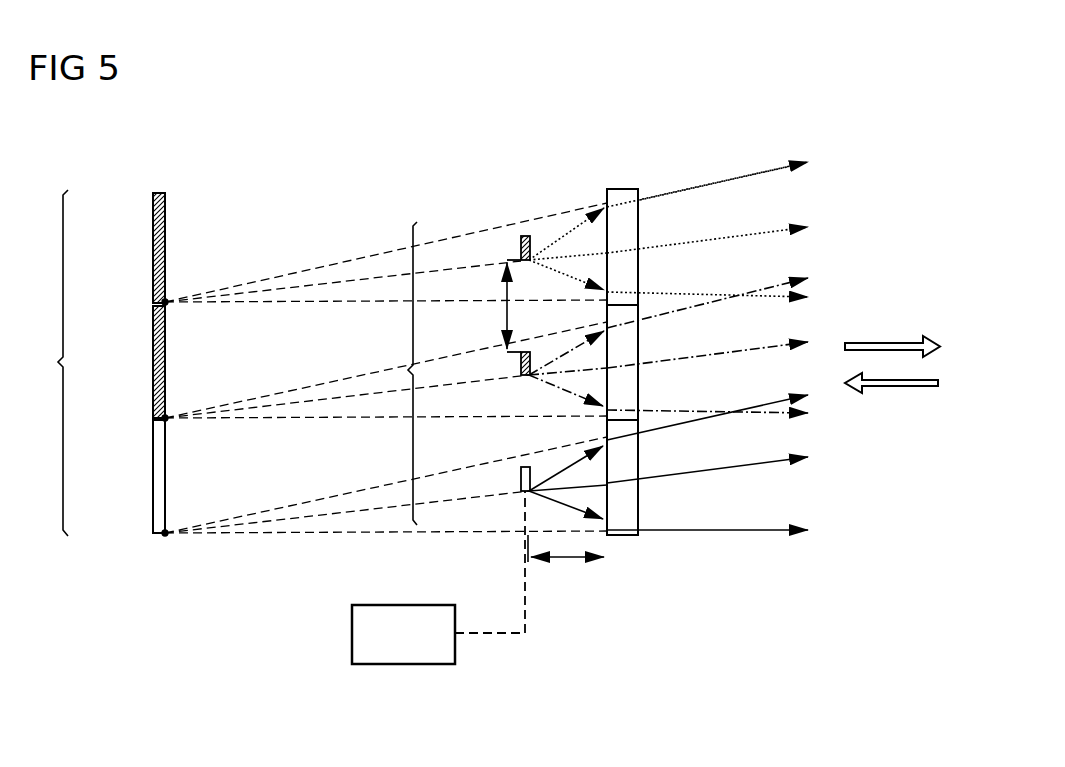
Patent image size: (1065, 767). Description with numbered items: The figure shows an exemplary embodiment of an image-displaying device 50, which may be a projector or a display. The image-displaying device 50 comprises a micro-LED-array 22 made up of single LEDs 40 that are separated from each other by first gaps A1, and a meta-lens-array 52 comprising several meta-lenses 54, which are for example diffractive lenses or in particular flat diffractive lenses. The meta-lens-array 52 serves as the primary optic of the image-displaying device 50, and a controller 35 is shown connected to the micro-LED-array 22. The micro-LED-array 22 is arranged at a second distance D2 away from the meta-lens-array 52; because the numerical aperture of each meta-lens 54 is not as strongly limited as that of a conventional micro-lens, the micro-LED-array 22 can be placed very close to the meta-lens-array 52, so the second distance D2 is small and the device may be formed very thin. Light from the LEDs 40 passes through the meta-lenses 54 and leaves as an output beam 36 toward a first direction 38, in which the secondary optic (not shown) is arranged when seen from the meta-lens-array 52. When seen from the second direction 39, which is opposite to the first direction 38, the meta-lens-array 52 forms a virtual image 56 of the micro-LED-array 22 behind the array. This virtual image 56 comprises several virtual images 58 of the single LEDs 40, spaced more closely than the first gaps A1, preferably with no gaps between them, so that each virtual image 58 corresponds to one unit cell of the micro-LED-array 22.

The micro-LED-array 22 is at (408, 370).
The controller 35 is at (402, 667).
The output light beam 36 is at (725, 168).
The first direction 38 is at (900, 393).
The second direction 39 is at (885, 340).
The LEDs 40 is at (527, 236).
The image-displaying device 50 is at (573, 158).
The meta-lens-array 52 is at (625, 543).
The meta-lenses 54 is at (626, 189).
The virtual image 56 is at (46, 363).
The virtual images 58 is at (153, 241).
The first gaps A1 is at (504, 308).
The second distance D2 is at (570, 562).